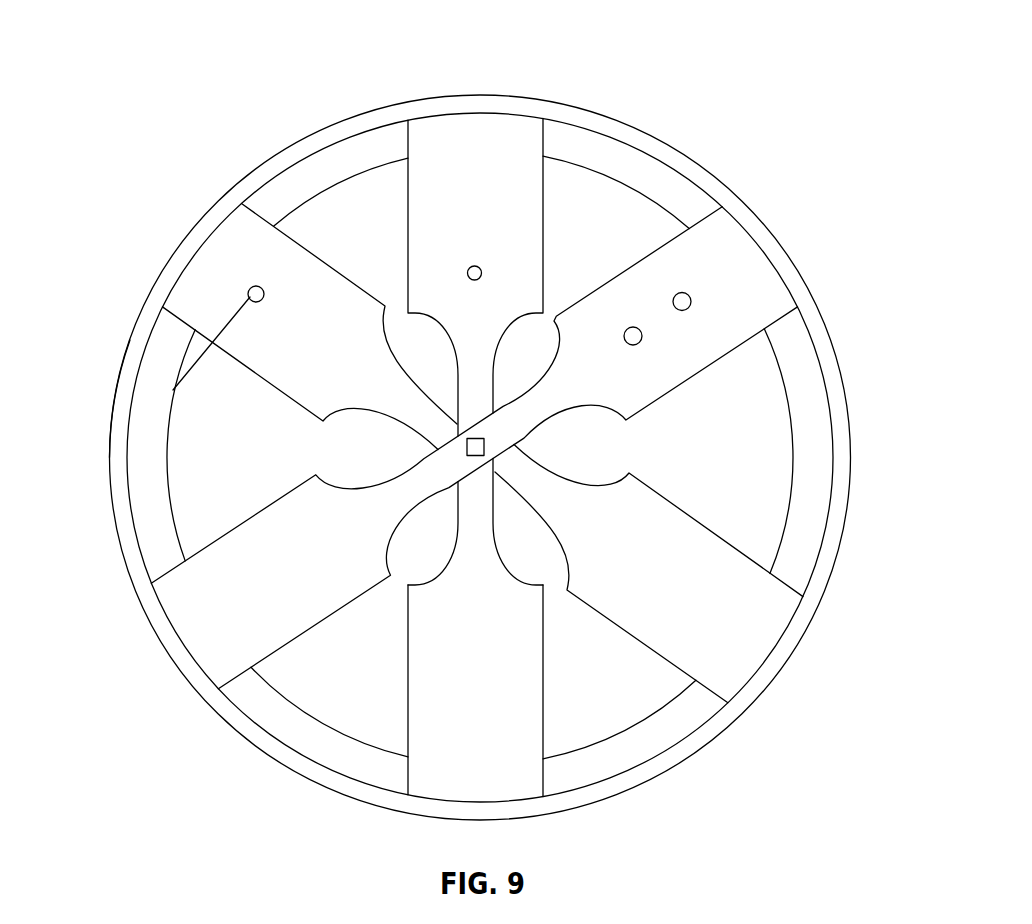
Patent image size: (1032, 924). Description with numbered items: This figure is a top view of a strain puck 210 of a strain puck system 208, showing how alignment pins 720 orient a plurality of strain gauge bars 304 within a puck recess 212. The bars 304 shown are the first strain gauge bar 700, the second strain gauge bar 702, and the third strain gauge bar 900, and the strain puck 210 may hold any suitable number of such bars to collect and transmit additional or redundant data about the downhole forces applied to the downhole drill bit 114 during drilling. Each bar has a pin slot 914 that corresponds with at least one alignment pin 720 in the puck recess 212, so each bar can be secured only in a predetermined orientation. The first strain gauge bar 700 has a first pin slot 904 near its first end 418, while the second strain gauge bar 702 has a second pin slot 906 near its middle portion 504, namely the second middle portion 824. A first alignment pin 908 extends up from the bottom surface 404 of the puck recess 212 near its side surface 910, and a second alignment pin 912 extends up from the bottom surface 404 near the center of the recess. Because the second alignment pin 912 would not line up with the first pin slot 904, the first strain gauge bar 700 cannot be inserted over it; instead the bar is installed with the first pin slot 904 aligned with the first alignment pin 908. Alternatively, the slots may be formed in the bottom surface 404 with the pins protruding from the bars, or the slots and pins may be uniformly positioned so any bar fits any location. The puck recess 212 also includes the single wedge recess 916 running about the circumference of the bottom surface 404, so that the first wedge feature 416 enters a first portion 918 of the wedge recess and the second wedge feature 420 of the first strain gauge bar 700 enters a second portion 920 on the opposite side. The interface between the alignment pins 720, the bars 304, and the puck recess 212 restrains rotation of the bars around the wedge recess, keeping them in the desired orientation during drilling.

The downhole drill bit 114 is at (851, 467).
The strain puck system 208 is at (200, 48).
The side surface 910 is at (107, 467).
The single wedge recess 916 is at (327, 163).
The second strain gauge bar 702 is at (475, 140).
The second pin slot 906 is at (474, 266).
The second alignment pin 912 is at (480, 268).
The second middle portion 824 is at (477, 343).
The pin slot 914 is at (482, 273).
The third strain gauge bar 900 is at (745, 245).
The middle portion 504 is at (450, 330).
The strain gauge bars 304 is at (240, 237).
The first end 418 is at (217, 232).
The second wedge feature 420 is at (790, 577).
The second portion 920 is at (710, 700).
The first pin slot 904 is at (248, 293).
The alignment pins 720 is at (258, 286).
The first alignment pin 908 is at (173, 390).
The first wedge feature 416 is at (166, 330).
The first strain gauge bar 700 is at (200, 273).
The first portion 918 is at (262, 200).
The strain puck 210 is at (595, 186).
The puck recess 212 is at (693, 196).
The bottom surface 404 is at (200, 442).